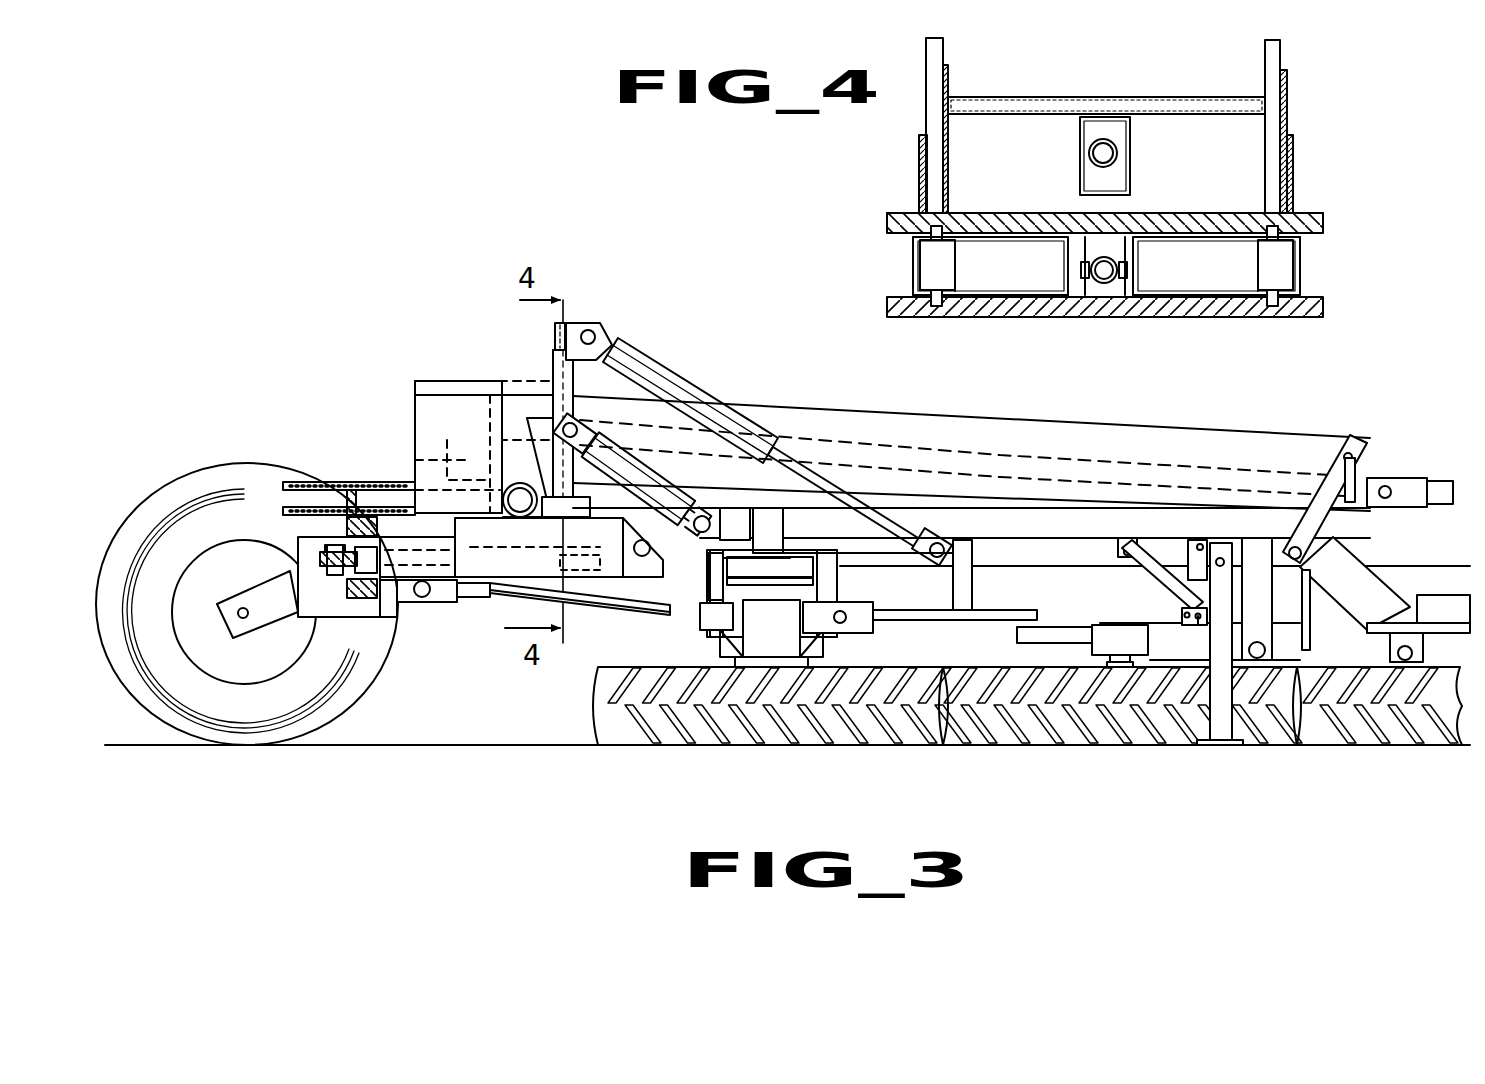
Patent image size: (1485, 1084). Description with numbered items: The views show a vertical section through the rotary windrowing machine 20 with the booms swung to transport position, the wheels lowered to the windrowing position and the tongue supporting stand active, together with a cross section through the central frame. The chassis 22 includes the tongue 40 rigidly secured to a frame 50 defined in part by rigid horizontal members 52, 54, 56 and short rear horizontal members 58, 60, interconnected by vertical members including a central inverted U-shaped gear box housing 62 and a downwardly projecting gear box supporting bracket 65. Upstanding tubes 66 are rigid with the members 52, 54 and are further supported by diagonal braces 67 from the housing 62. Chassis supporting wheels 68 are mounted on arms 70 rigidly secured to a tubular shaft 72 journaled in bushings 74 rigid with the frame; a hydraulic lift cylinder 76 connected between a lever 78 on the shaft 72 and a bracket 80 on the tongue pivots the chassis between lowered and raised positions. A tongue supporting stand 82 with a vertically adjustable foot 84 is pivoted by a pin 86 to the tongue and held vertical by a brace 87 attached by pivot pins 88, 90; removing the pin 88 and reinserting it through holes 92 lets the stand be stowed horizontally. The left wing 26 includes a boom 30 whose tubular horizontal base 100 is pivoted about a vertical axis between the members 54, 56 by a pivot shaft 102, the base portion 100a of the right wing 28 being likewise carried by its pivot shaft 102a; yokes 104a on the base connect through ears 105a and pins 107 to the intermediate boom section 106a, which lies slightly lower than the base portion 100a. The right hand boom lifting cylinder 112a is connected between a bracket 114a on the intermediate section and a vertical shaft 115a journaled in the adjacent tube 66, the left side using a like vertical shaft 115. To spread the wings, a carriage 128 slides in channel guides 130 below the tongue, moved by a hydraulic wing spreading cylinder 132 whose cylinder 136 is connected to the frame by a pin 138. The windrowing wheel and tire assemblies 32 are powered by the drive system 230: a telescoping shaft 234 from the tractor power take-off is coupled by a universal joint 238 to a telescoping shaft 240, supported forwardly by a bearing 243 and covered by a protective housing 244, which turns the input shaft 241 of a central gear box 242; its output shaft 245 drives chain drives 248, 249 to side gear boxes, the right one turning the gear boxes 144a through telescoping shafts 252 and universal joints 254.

In FIG. 3, the rotary windrowing machine 20 is at (348, 348).
In FIG. 3, the chassis 22 is at (410, 388).
In FIG. 4, the left wing 26 is at (910, 278).
In FIG. 4, the right wing 28 is at (1303, 278).
In FIG. 3, the right wing 28 is at (1010, 565).
In FIG. 4, the boom 30 is at (913, 258).
In FIG. 3, the boom 30 is at (1055, 632).
In FIG. 3, the windrowing wheel and tire assemblies 32 is at (990, 662).
In FIG. 3, the tongue 40 is at (1337, 628).
In FIG. 4, the frame 50 is at (1307, 212).
In FIG. 3, the frame 50 is at (590, 395).
In FIG. 4, the horizontal member 52 is at (1060, 97).
In FIG. 4, the horizontal member 54 is at (887, 221).
In FIG. 3, the horizontal member 54 is at (580, 517).
In FIG. 4, the horizontal member 56 is at (887, 307).
In FIG. 3, the horizontal member 56 is at (548, 600).
In FIG. 3, the short rear horizontal member 58 is at (378, 527).
In FIG. 3, the short rear horizontal member 60 is at (360, 598).
In FIG. 3, the gear box housing 62 is at (415, 408).
In FIG. 3, the gear box supporting bracket 65 is at (318, 558).
In FIG. 4, the upstanding tubes 66 is at (948, 76).
In FIG. 3, the upstanding tubes 66 is at (553, 358).
In FIG. 3, the diagonal braces 67 is at (550, 382).
In FIG. 3, the chassis supporting wheels 68 is at (340, 720).
In FIG. 3, the arms 70 is at (263, 615).
In FIG. 3, the tubular shaft 72 is at (508, 490).
In FIG. 3, the bushings 74 is at (520, 518).
In FIG. 3, the hydraulic lift cylinder 76 is at (640, 470).
In FIG. 3, the lever 78 is at (527, 428).
In FIG. 3, the bracket 80 is at (738, 518).
In FIG. 3, the tongue supporting stand 82 is at (1185, 735).
In FIG. 3, the vertically adjustable foot 84 is at (1238, 745).
In FIG. 3, the pin 86 is at (1222, 560).
In FIG. 3, the brace 87 is at (1155, 580).
In FIG. 3, the pivot pin 88 is at (1128, 548).
In FIG. 3, the pivot pin 90 is at (1198, 620).
In FIG. 3, the holes 92 is at (1182, 612).
In FIG. 4, the horizontal base 100 is at (1030, 295).
In FIG. 4, the base portion 100a is at (1180, 295).
In FIG. 3, the base portion 100a is at (538, 566).
In FIG. 4, the pivot shaft 102 is at (937, 307).
In FIG. 4, the right post stub 102a is at (1273, 307).
In FIG. 3, the drive shaft 104a is at (612, 610).
In FIG. 3, the shaft bracket 105a is at (657, 582).
In FIG. 3, the intermediate boom section 106a is at (862, 575).
In FIG. 3, the pins 107 is at (650, 548).
In FIG. 3, the boom lifting cylinder 112a is at (665, 362).
In FIG. 3, the cylinder post 114a is at (964, 545).
In FIG. 4, the vertical shaft 115 is at (943, 43).
In FIG. 4, the right upright 115a is at (1280, 50).
In FIG. 3, the right upright 115a is at (558, 326).
In FIG. 4, the carriage 128 is at (1118, 272).
In FIG. 4, the channel guides 130 is at (1084, 286).
In FIG. 4, the hydraulic wing spreading cylinder 132 is at (1095, 263).
In FIG. 3, the hydraulic wing spreading cylinder 132 is at (476, 600).
In FIG. 3, the cylinder 136 is at (348, 590).
In FIG. 3, the pin 138 is at (332, 545).
In FIG. 3, the gear boxes 144a is at (771, 633).
In FIG. 3, the drive system 230 is at (1405, 520).
In FIG. 3, the telescoping shaft 234 is at (1445, 507).
In FIG. 3, the universal joint 238 is at (1398, 490).
In FIG. 3, the telescoping shaft 240 is at (882, 432).
In FIG. 4, the input shaft 241 is at (1090, 150).
In FIG. 3, the input shaft 241 is at (560, 412).
In FIG. 3, the central gear box 242 is at (478, 378).
In FIG. 3, the bearing 243 is at (1350, 505).
In FIG. 4, the protective housing 244 is at (1082, 173).
In FIG. 3, the protective housing 244 is at (980, 437).
In FIG. 3, the output shaft 245 is at (440, 483).
In FIG. 3, the chain drive 248 is at (290, 507).
In FIG. 3, the chain drive 249 is at (320, 482).
In FIG. 3, the telescoping shafts 252 is at (980, 612).
In FIG. 3, the universal joints 254 is at (850, 610).